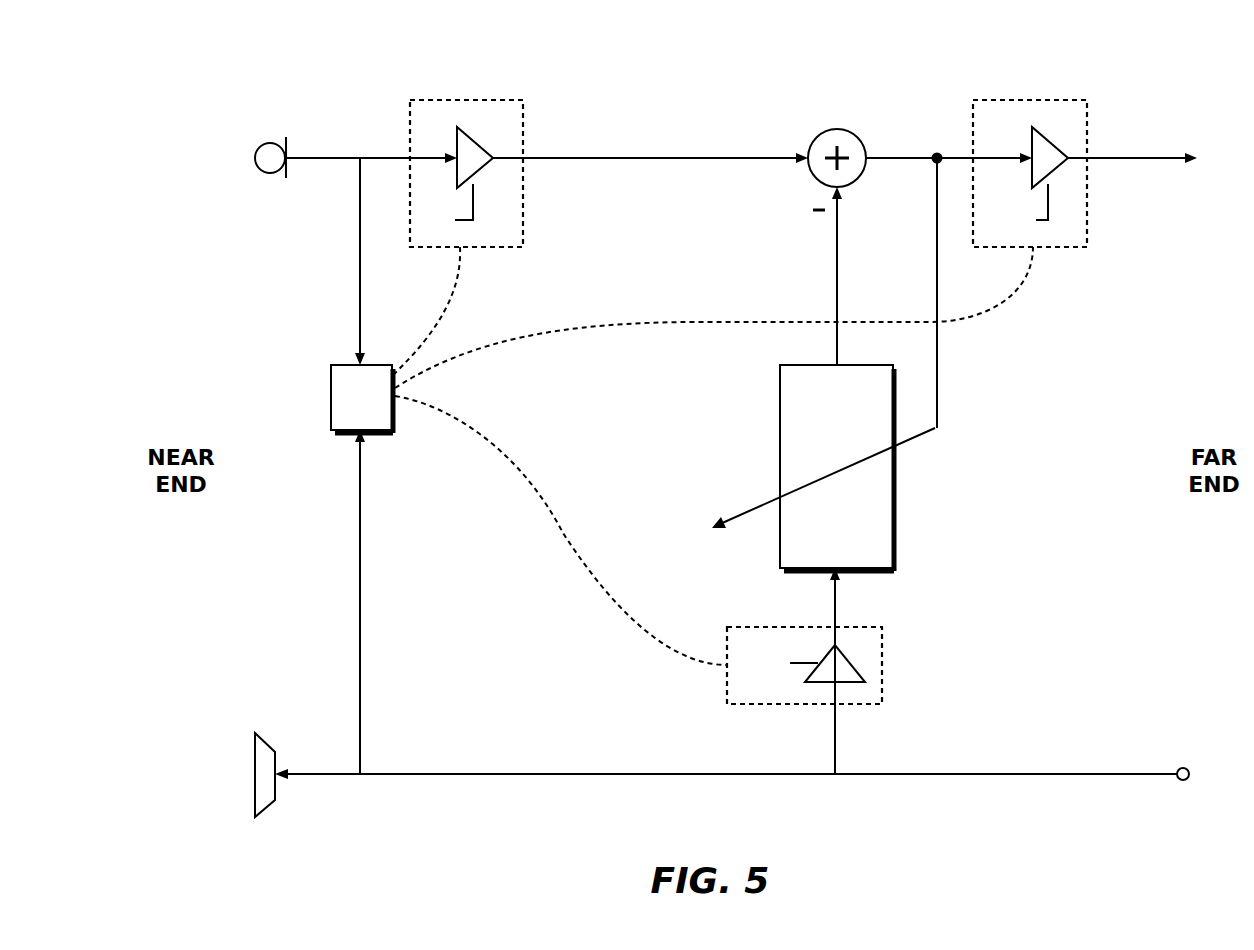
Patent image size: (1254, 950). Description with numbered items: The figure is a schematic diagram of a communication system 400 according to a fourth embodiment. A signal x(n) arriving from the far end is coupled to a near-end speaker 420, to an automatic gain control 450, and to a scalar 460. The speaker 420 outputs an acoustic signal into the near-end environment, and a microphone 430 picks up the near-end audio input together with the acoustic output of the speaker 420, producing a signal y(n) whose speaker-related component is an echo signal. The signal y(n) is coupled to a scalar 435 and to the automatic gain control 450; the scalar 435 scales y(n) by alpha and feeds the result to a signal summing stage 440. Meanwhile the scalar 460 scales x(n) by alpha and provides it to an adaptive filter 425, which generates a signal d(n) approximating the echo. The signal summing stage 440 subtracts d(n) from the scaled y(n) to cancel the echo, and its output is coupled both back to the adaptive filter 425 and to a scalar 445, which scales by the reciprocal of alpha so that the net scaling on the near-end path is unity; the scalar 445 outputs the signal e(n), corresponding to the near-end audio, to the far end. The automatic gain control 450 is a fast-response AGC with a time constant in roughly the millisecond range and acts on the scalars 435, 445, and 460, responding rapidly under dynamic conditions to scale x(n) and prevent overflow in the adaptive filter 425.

The communication system 400 is at (1146, 40).
The speaker 420 is at (268, 808).
The adaptive filter 425 is at (897, 517).
The microphone 430 is at (273, 143).
The scalar 435 is at (473, 133).
The signal summing stage 440 is at (840, 128).
The scalar 445 is at (1048, 133).
The automatic gain control 450 is at (382, 437).
The scalar 460 is at (856, 665).